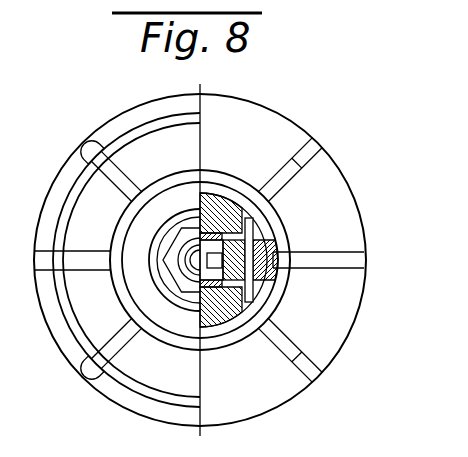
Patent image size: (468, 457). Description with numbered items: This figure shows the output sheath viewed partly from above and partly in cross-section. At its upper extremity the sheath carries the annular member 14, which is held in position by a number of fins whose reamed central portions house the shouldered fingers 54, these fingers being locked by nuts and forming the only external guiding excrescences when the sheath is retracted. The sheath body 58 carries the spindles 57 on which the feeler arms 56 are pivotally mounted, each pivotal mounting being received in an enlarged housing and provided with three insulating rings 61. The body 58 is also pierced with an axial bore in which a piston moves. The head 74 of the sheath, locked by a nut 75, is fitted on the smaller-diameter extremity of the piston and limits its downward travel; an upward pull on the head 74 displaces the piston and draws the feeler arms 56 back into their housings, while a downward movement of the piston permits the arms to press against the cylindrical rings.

The annular member 14 is at (63, 204).
The shouldered fingers 54 is at (82, 153).
The feeler arms 56 is at (350, 260).
The spindles 57 is at (255, 225).
The sheath body 58 is at (225, 215).
The insulating rings 61 is at (276, 256).
The head 74 is at (143, 283).
The nut 75 is at (186, 282).